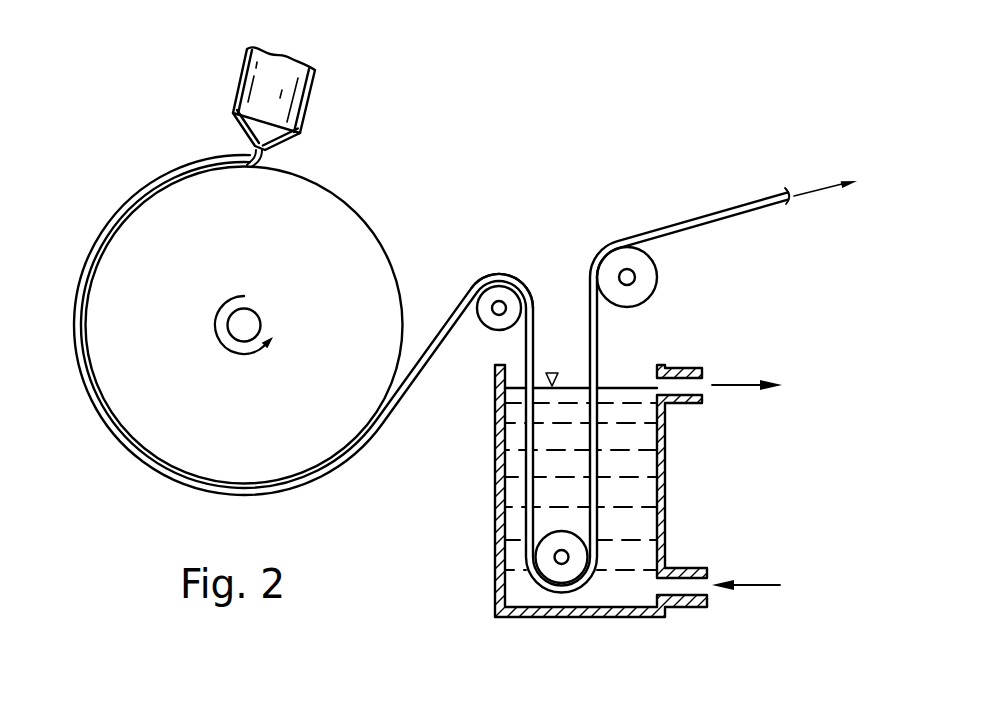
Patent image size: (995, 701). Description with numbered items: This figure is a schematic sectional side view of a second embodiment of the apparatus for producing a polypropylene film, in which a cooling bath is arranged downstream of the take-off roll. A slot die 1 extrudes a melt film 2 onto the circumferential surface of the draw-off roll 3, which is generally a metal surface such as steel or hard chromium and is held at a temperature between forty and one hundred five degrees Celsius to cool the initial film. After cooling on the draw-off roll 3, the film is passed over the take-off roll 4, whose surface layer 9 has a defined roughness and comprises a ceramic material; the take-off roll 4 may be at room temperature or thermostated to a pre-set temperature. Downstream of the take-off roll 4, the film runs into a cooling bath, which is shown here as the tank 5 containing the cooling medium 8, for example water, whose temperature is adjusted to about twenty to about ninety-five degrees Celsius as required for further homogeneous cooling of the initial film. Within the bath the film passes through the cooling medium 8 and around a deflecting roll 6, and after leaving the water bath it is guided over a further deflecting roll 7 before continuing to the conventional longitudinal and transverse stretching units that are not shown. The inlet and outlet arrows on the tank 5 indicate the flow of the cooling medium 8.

The slot die 1 is at (247, 85).
The melt film 2 is at (124, 212).
The draw-off roll 3 is at (342, 212).
The take-off roll 4 is at (500, 292).
The liquid bath tank 5 is at (614, 614).
The deflecting roll 6 is at (557, 573).
The further deflecting roll 7 is at (615, 260).
The cooling medium 8 is at (627, 395).
The surface layer 9 is at (478, 327).